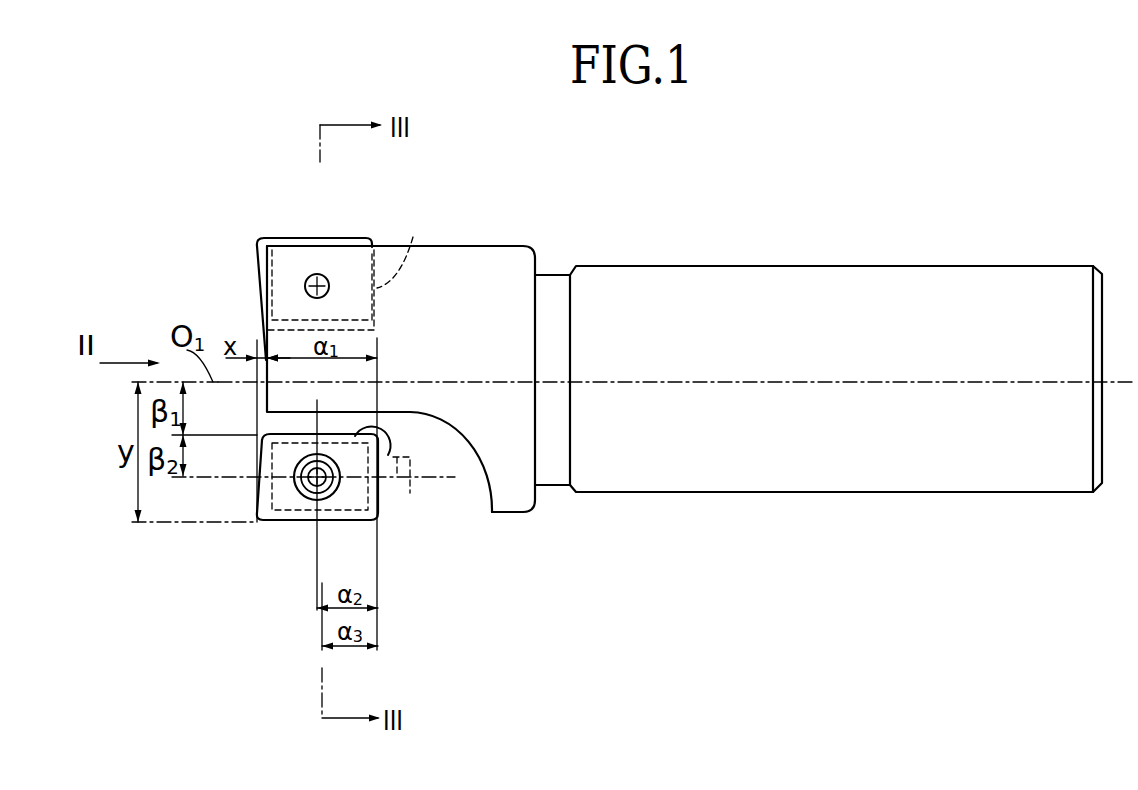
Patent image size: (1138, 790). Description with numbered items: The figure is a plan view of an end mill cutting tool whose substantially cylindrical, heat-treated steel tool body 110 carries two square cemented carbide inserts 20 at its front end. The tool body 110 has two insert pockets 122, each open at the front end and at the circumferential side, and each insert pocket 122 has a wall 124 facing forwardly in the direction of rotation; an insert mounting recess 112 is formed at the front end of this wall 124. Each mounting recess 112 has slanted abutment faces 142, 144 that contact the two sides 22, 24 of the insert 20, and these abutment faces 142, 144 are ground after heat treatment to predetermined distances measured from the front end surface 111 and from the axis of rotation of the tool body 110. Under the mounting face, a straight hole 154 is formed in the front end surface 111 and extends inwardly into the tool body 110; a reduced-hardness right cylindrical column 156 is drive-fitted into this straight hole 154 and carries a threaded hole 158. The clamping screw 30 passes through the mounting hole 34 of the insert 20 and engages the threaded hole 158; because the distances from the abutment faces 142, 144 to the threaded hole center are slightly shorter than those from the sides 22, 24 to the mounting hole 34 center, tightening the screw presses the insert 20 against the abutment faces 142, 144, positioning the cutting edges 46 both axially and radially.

The insert 20 is at (292, 240).
The side of the insert 22 is at (418, 548).
The side of the insert 24 is at (377, 330).
The clamping screw 30 is at (311, 500).
The mounting hole 34 is at (303, 492).
The cutting edges 46 is at (268, 237).
The tool body 110 is at (763, 277).
The front end surface 111 is at (265, 333).
The insert mounting recess 112 is at (352, 283).
The insert pocket 122 is at (480, 490).
The wall of the insert pocket 124 is at (450, 460).
The abutment face 142 is at (370, 520).
The abutment face 144 is at (318, 430).
The straight hole 154 is at (410, 460).
The right cylindrical column 156 is at (410, 493).
The threaded hole 158 is at (326, 290).